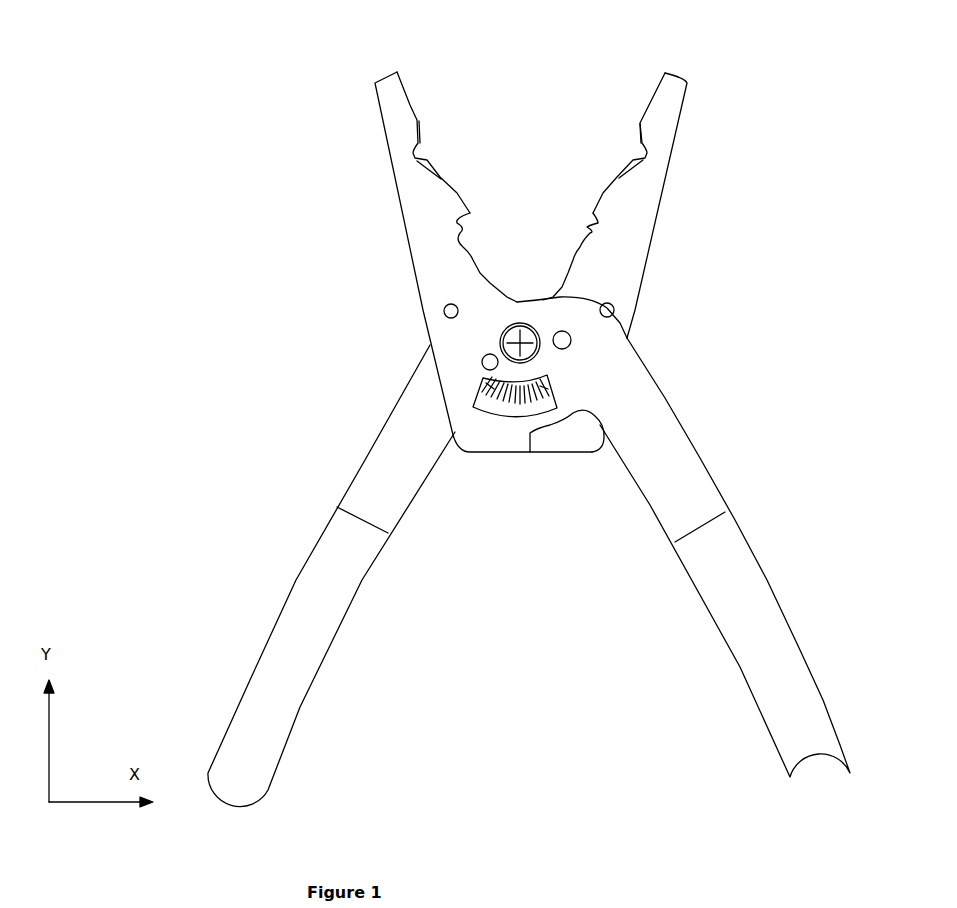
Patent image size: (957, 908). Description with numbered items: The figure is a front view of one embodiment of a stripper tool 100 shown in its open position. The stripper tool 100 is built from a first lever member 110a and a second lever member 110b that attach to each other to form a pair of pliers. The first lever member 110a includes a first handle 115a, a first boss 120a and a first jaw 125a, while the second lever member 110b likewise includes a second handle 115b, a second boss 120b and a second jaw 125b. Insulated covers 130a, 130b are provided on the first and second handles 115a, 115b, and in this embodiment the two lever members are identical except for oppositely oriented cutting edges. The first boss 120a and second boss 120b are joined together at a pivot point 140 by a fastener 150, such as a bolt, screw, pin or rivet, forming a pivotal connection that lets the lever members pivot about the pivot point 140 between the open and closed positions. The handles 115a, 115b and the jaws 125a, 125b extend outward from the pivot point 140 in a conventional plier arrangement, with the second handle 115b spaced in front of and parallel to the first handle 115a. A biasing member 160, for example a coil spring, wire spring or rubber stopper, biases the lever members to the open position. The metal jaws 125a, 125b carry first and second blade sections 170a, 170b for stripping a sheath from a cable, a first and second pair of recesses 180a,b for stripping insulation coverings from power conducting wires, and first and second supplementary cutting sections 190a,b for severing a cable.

The stripper tool 100 is at (255, 70).
The first lever member 110a is at (798, 473).
The second lever member 110b is at (255, 452).
The first handle 115a is at (668, 492).
The second handle 115b is at (392, 468).
The first boss 120a is at (600, 333).
The second boss 120b is at (562, 437).
The first jaw 125a is at (427, 275).
The second jaw 125b is at (637, 262).
The insulated cover 130a is at (290, 717).
The insulated cover 130b is at (793, 762).
The pivot point 140 is at (540, 348).
The fastener 150 is at (502, 337).
The biasing member 160 is at (495, 375).
The first blade section 170a is at (427, 142).
The second blade section 170b is at (632, 157).
The first and second pair of recesses 180a,b is at (577, 217).
The first and second supplementary cutting sections 190a,b is at (577, 270).